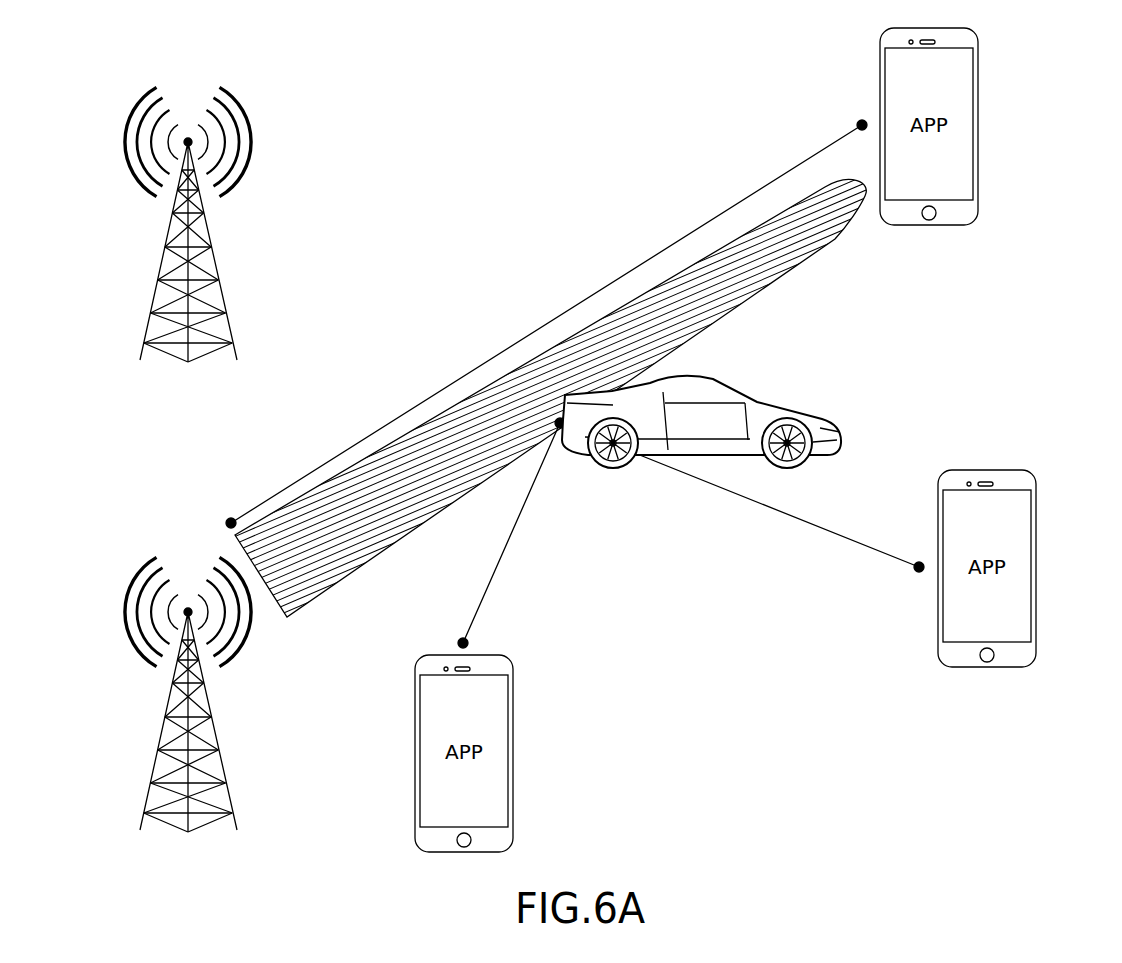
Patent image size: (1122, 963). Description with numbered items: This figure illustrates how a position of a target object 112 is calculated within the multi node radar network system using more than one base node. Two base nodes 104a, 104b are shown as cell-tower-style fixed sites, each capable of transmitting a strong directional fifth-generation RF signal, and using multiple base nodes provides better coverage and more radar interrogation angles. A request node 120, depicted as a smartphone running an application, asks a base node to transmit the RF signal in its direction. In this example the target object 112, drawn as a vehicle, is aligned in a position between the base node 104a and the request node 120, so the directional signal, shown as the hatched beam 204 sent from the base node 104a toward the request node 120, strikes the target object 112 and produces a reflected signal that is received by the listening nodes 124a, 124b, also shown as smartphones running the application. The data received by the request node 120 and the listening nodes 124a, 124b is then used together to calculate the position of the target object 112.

The base node 104a is at (128, 552).
The base node 104b is at (128, 82).
The target object 112 is at (799, 401).
The request node 120 is at (884, 32).
The listening node 124a is at (1031, 474).
The listening node 124b is at (509, 659).
The directional beam 204 is at (500, 374).